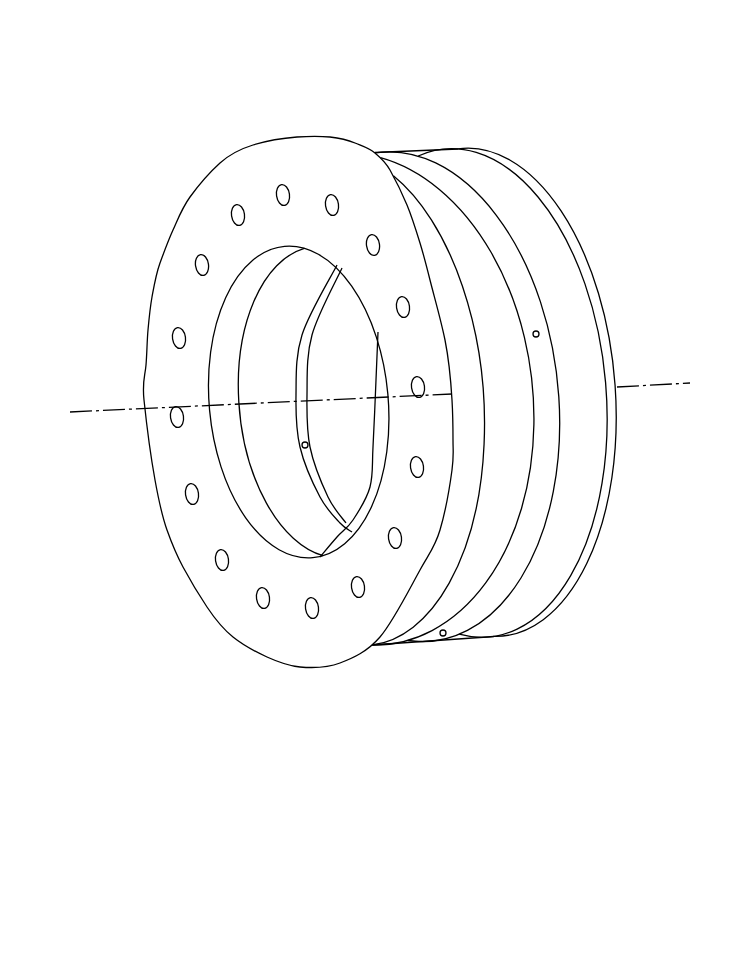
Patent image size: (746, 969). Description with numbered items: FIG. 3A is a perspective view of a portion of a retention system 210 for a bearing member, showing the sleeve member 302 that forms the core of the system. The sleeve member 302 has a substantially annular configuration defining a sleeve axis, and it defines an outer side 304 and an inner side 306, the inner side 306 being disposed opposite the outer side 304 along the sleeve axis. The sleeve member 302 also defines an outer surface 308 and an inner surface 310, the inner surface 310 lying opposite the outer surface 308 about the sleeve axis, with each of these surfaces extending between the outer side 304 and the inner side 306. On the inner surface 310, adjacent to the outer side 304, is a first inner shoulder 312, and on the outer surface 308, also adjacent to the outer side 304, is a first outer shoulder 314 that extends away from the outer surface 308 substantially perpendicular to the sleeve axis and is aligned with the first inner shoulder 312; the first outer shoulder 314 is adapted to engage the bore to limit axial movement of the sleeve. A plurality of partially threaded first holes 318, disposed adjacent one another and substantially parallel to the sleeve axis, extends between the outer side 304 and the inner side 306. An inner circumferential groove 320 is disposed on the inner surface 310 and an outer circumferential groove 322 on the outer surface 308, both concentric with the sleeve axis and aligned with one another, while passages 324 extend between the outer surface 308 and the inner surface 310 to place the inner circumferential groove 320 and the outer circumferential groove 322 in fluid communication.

The retention system 210 is at (655, 78).
The sleeve member 302 is at (549, 176).
The outer side 304 is at (190, 557).
The inner side 306 is at (617, 437).
The outer surface 308 is at (482, 180).
The inner surface 310 is at (280, 460).
The first inner shoulder 312 is at (228, 362).
The first outer shoulder 314 is at (358, 153).
The first holes 318 is at (312, 617).
The inner circumferential groove 320 is at (302, 322).
The outer circumferential groove 322 is at (522, 285).
The passages 324 is at (541, 333).